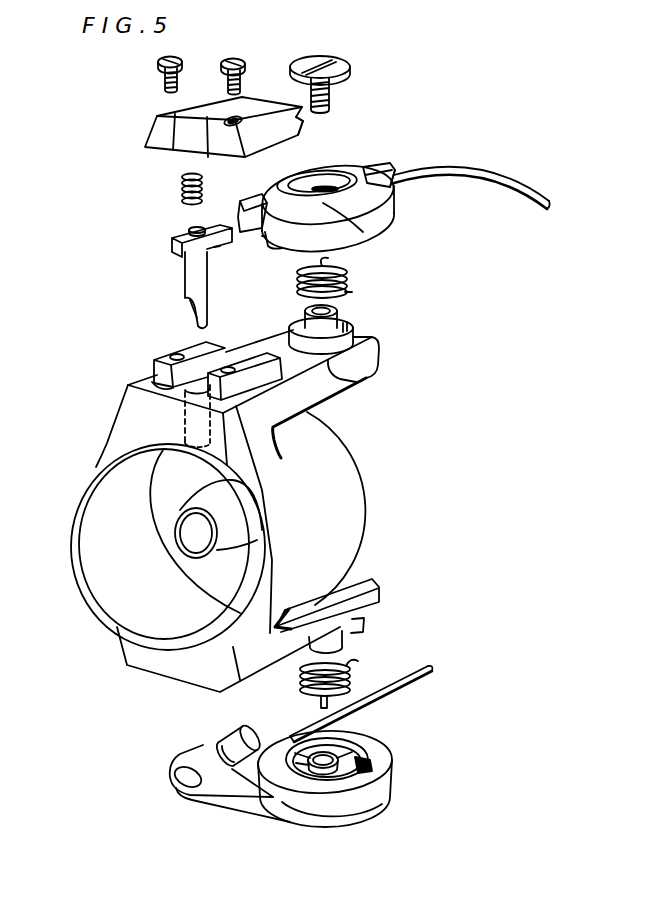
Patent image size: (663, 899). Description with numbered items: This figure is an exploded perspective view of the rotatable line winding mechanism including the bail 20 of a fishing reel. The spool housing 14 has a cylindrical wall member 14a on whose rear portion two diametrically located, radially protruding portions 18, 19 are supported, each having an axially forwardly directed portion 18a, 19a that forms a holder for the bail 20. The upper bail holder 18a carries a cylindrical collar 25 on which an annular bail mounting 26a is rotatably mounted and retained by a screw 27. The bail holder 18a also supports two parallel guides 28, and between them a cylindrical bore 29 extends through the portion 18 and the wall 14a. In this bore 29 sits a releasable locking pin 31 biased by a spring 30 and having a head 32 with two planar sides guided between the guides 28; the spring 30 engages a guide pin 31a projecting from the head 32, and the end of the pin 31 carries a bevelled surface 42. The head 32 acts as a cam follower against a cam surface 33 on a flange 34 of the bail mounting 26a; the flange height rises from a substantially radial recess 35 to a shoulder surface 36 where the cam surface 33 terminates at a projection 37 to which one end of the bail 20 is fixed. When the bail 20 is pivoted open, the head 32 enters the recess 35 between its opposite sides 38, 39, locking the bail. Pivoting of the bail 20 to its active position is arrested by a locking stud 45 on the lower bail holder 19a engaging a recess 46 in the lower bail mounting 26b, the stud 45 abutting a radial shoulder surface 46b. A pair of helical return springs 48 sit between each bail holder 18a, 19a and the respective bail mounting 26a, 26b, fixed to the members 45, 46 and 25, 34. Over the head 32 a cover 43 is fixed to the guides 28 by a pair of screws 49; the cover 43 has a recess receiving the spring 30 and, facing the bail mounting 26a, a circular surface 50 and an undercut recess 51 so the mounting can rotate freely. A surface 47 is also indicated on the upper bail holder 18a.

The spool housing 14 is at (255, 529).
The cylindrical wall member 14a is at (345, 518).
The radially protruding portion 18 is at (253, 447).
The upper bail holder 18a is at (380, 352).
The radially protruding portion 19 is at (222, 693).
The lower bail holder 19a is at (301, 639).
The bail 20 is at (481, 172).
The cylindrical collar 25 is at (348, 343).
The bail mounting 26a is at (333, 215).
The lower bail mounting 26b is at (356, 767).
The screw 27 is at (331, 94).
The parallel guides 28 is at (259, 356).
The cylindrical bore 29 is at (153, 382).
The spring 30 is at (182, 190).
The pin 31 is at (190, 268).
The guide pin 31a is at (190, 232).
The head 32 is at (217, 251).
The cam surface 33 is at (372, 240).
The flange 34 is at (388, 214).
The recess 35 is at (258, 246).
The shoulder surface 36 is at (396, 188).
The projection 37 is at (391, 163).
The side of recess 38 is at (242, 204).
The side of recess 39 is at (268, 248).
The bevelled surface 42 is at (188, 303).
The cover 43 is at (216, 115).
The locking stud 45 is at (376, 620).
The recess 46 is at (368, 752).
The shoulder surface 46b is at (380, 752).
The recess surface 47 is at (358, 382).
The return springs 48 is at (348, 270).
The screws 49 is at (221, 64).
The circular surface 50 is at (266, 107).
The undercut recess 51 is at (302, 131).